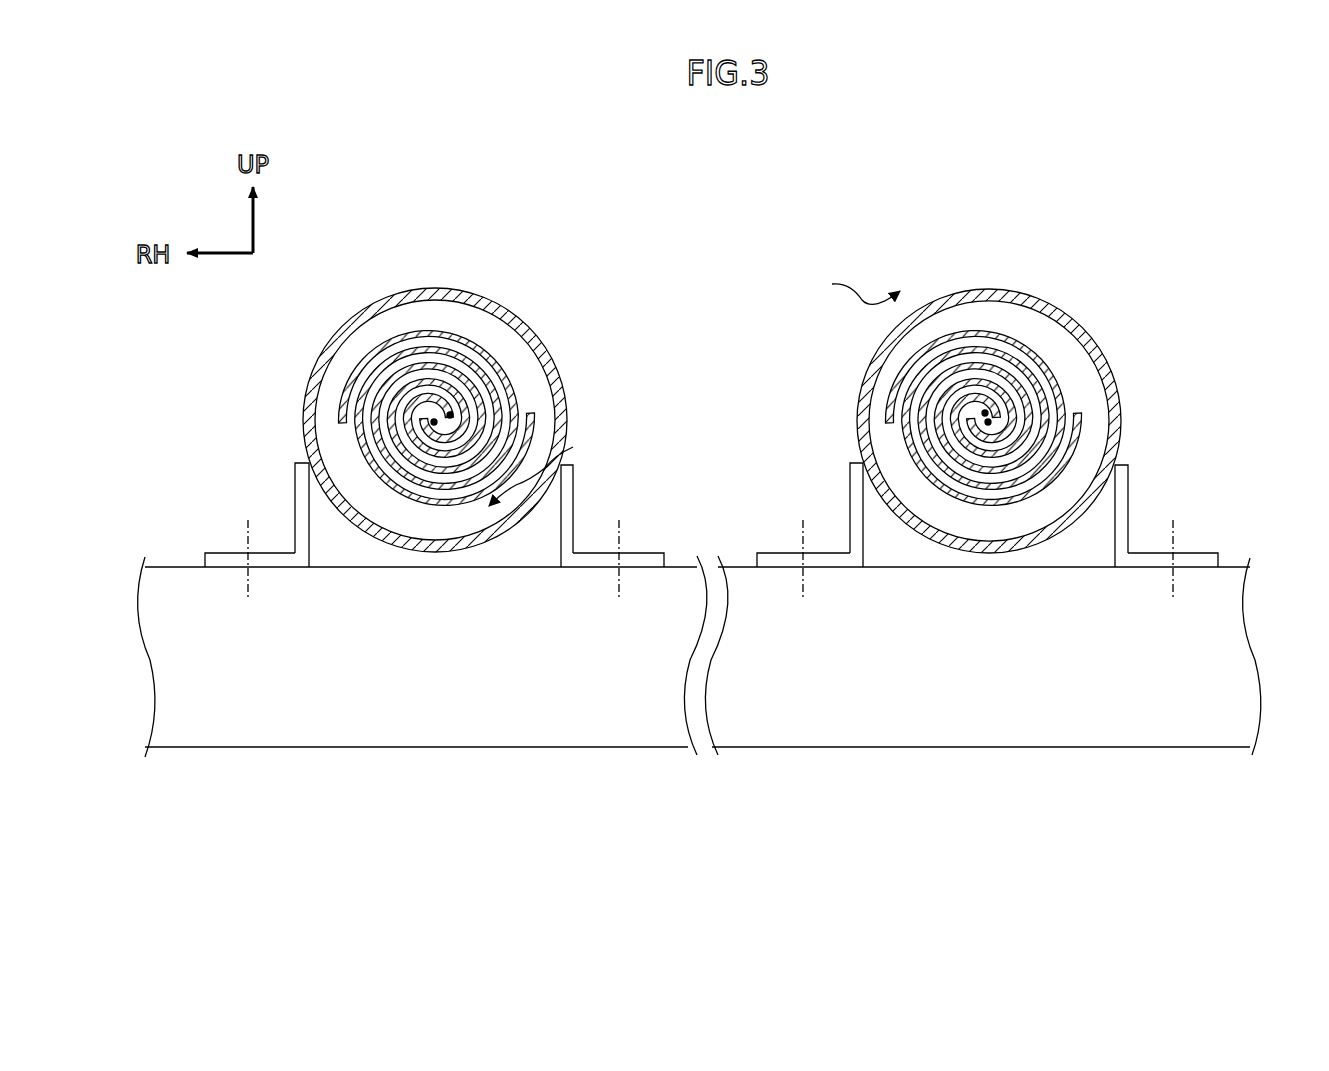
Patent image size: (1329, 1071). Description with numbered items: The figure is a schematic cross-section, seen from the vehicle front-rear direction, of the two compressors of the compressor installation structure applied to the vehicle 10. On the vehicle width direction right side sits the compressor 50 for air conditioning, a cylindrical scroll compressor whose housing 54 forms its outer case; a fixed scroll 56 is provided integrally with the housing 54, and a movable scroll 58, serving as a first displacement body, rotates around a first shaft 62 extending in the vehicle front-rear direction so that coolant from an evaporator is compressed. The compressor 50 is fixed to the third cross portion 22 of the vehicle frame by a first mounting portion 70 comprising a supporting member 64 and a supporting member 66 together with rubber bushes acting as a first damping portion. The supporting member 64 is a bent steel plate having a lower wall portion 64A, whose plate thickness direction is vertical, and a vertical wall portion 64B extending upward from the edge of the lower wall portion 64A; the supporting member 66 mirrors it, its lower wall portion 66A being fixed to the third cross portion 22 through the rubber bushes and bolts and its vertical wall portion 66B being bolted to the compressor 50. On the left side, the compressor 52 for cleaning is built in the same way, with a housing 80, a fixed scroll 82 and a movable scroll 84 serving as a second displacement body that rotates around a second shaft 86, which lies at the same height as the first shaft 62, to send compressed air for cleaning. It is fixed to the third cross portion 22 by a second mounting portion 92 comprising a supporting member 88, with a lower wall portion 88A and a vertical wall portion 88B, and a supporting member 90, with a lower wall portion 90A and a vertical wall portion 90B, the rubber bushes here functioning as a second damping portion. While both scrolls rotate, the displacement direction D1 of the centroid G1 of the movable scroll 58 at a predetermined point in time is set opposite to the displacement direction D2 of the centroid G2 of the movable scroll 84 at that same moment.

The vehicle 10 is at (1087, 130).
The third cross portion 22 is at (263, 722).
The compressor for air conditioning 50 is at (478, 229).
The compressor for cleaning 52 is at (1095, 258).
The housing 54 is at (511, 313).
The fixed scroll 56 is at (533, 420).
The movable scroll 58 is at (360, 357).
The first shaft 62 is at (433, 425).
The supporting member 64 is at (580, 483).
The lower wall portion 64A is at (594, 557).
The vertical wall portion 64B is at (574, 506).
The supporting member 66 is at (290, 483).
The lower wall portion 66A is at (221, 557).
The vertical wall portion 66B is at (300, 489).
The first mounting portion 70 is at (660, 419).
The housing 80 is at (1097, 340).
The fixed scroll 82 is at (1085, 421).
The movable scroll 84 is at (873, 370).
The second shaft 86 is at (988, 425).
The supporting member 88 is at (1133, 484).
The lower wall portion 88A is at (1200, 558).
The vertical wall portion 88B is at (1130, 505).
The supporting member 90 is at (845, 481).
The lower wall portion 90A is at (778, 557).
The vertical wall portion 90B is at (855, 488).
The second mounting portion 92 is at (1225, 463).
The centroid G1 is at (453, 413).
The centroid G2 is at (985, 410).
The displacement direction D1 is at (548, 467).
The displacement direction D2 is at (847, 282).